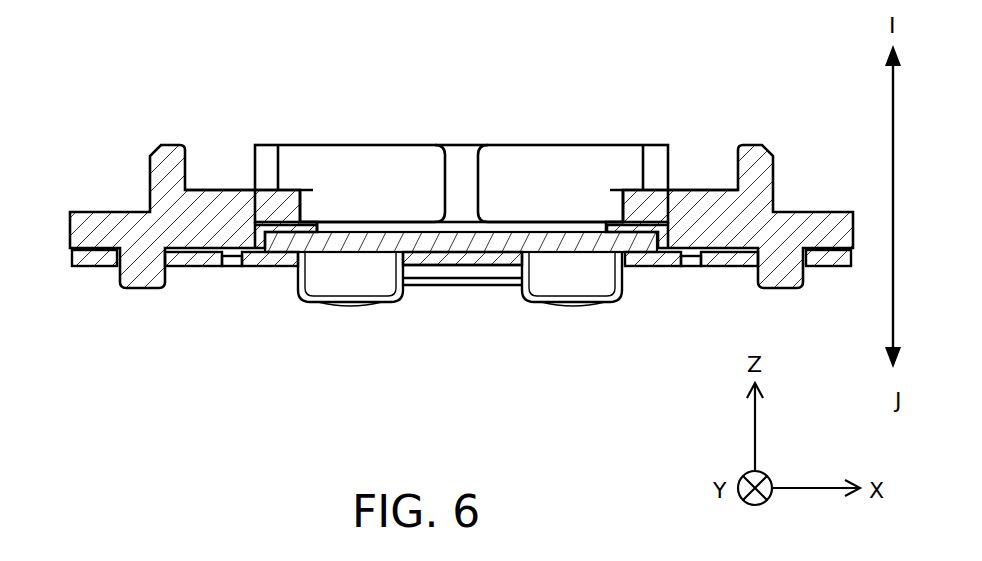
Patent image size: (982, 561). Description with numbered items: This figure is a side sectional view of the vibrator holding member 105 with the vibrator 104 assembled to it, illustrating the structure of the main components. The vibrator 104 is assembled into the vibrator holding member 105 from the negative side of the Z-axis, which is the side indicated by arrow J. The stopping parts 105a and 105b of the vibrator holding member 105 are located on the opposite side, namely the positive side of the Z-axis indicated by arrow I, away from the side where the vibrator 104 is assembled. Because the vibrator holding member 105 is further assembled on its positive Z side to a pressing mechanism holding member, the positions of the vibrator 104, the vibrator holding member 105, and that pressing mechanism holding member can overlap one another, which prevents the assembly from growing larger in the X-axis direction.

The vibrator 104 is at (648, 265).
The vibrator holding member 105 is at (462, 177).
The stopping part 105a is at (140, 157).
The stopping part 105b is at (778, 157).